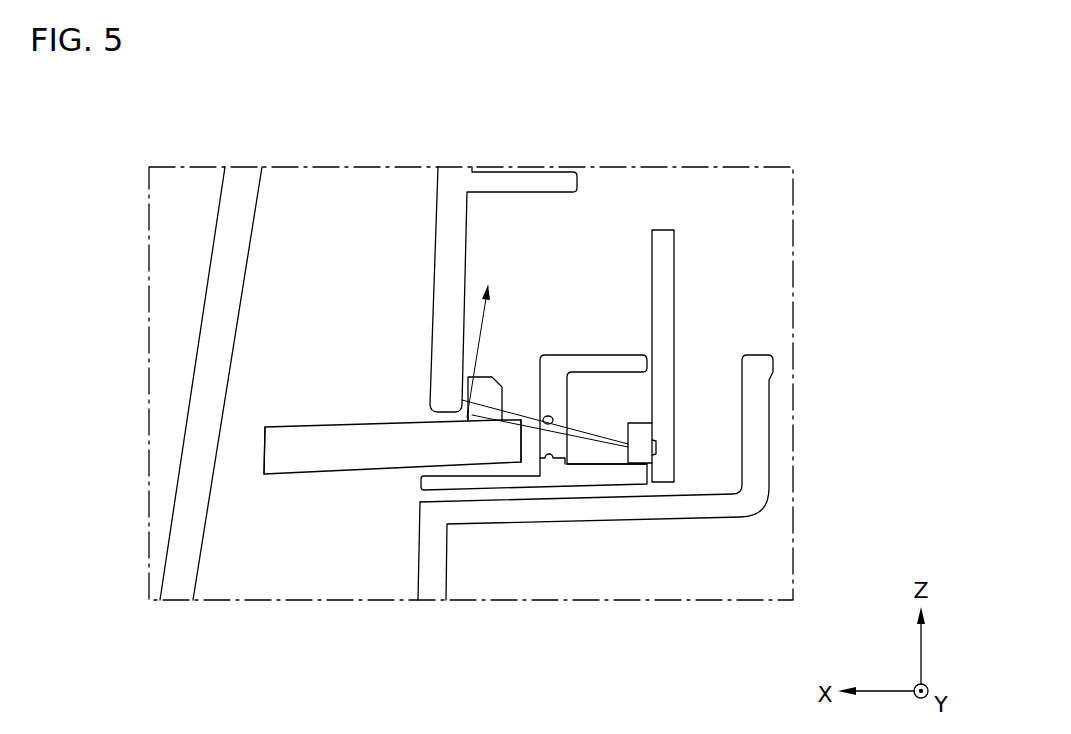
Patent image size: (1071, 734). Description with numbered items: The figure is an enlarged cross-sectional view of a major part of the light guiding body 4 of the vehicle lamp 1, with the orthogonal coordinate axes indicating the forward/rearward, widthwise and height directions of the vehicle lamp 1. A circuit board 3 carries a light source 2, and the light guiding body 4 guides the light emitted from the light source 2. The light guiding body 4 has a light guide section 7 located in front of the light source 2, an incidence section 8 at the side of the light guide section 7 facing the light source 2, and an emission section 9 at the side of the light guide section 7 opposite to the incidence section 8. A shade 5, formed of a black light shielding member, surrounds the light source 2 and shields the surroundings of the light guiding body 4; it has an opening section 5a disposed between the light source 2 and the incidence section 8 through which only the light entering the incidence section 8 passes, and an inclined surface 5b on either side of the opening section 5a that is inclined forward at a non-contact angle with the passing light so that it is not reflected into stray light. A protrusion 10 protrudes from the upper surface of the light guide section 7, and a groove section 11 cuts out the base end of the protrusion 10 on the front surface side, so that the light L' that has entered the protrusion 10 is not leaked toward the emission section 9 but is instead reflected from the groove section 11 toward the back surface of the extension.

The vehicle lamp 1 is at (131, 123).
The light source 2 is at (653, 447).
The circuit board 3 is at (665, 237).
The light guiding body 4 is at (393, 432).
The shade 5 is at (600, 355).
The opening section 5a is at (567, 443).
The inclined surface 5b is at (553, 420).
The light guide section 7 is at (360, 458).
The incidence section 8 is at (522, 456).
The emission section 9 is at (263, 450).
The protrusion 10 is at (498, 387).
The groove section 11 is at (465, 415).
The light L' is at (505, 338).